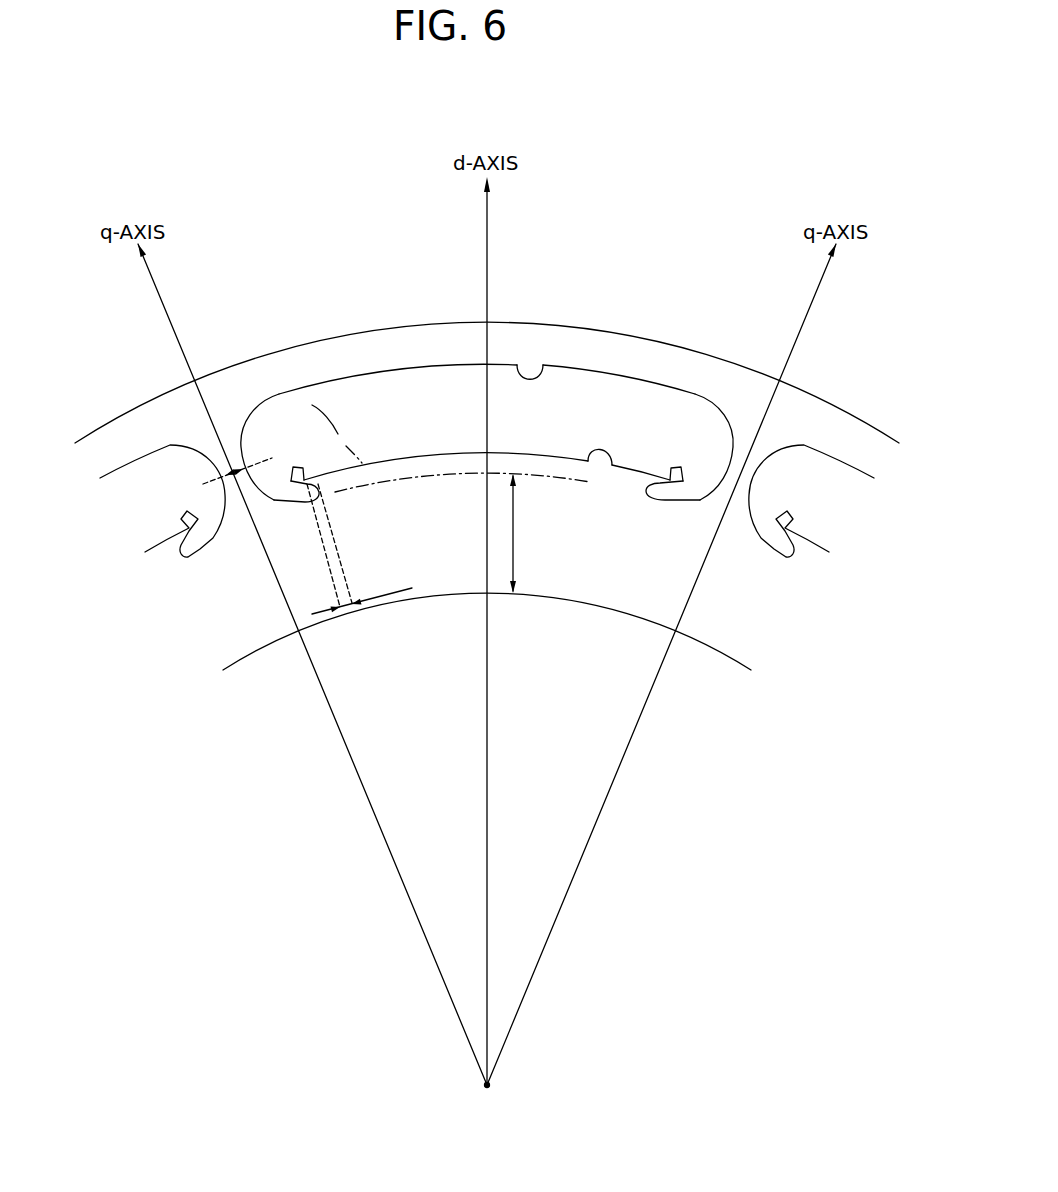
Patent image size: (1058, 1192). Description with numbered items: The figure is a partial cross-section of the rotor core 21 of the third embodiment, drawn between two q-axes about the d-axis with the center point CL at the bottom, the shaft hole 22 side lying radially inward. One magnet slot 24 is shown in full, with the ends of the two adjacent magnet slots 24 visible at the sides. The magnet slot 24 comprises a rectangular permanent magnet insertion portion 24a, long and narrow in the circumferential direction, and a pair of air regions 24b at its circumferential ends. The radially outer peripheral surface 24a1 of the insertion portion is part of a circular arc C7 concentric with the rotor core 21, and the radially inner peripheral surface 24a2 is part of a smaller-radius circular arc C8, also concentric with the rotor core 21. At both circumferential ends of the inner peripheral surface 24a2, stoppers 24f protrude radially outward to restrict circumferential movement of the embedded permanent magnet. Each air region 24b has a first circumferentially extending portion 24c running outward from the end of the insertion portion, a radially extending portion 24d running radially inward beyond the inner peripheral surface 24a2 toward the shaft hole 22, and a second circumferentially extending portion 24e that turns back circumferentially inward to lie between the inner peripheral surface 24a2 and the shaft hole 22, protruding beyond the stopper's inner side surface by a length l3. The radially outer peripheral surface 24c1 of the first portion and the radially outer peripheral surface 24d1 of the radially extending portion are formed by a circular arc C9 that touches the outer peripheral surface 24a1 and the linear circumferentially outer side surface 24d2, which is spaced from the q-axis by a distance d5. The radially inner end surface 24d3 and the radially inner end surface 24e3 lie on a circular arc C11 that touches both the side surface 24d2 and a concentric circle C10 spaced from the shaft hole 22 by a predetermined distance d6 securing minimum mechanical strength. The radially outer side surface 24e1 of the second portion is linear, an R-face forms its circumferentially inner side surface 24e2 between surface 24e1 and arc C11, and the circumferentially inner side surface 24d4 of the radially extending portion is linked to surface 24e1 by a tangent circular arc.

The rotor core 21 is at (823, 408).
The shaft hole 22 is at (558, 608).
The magnet slot 24 is at (485, 439).
The permanent magnet insertion portion 24a is at (487, 332).
The radially outer peripheral surface 24a1 is at (532, 372).
The radially inner peripheral surface 24a2 is at (600, 470).
The air region 24b is at (703, 430).
The first circumferentially extending portion 24c is at (261, 385).
The radially outer peripheral surface 24c1 is at (270, 396).
The radially extending portion 24d is at (219, 451).
The radially outer peripheral surface 24d1 is at (226, 448).
The circumferentially outer side surface 24d2 is at (229, 475).
The radially inner end surface 24d3 is at (284, 505).
The circumferentially inner side surface 24d4 is at (280, 468).
The second circumferentially extending portion 24e is at (487, 543).
The radially outer side surface 24e1 is at (330, 477).
The circumferentially inner side surface 24e2 is at (327, 481).
The radially inner end surface 24e3 is at (306, 493).
The stopper 24f is at (674, 467).
The circular arc C7 is at (736, 410).
The circular arc C8 is at (688, 481).
The circular arc C9 is at (316, 404).
The concentric circle C10 is at (472, 485).
The circular arc C11 is at (348, 445).
The distance d5 is at (225, 473).
The predetermined distance d6 is at (527, 533).
The length l3 is at (361, 549).
The center line / rotation center CL is at (493, 1093).